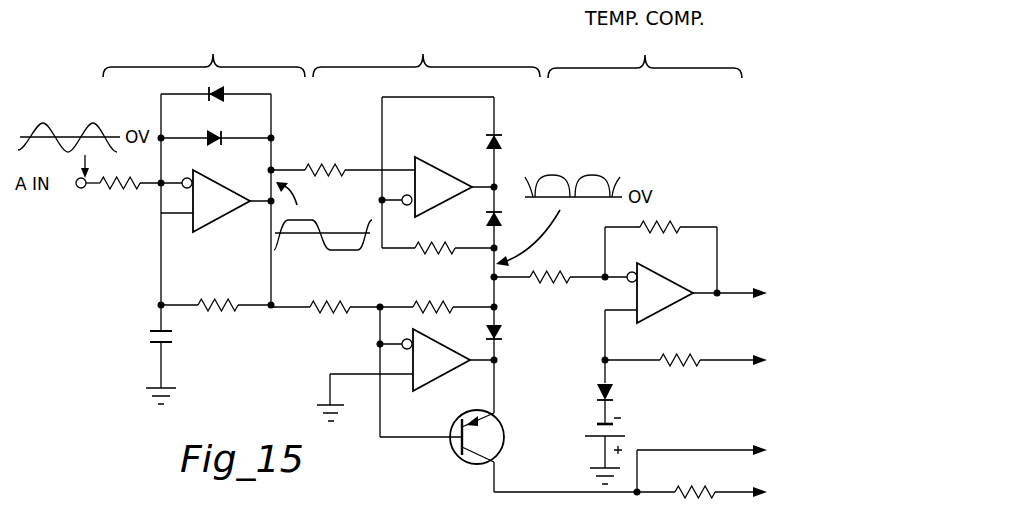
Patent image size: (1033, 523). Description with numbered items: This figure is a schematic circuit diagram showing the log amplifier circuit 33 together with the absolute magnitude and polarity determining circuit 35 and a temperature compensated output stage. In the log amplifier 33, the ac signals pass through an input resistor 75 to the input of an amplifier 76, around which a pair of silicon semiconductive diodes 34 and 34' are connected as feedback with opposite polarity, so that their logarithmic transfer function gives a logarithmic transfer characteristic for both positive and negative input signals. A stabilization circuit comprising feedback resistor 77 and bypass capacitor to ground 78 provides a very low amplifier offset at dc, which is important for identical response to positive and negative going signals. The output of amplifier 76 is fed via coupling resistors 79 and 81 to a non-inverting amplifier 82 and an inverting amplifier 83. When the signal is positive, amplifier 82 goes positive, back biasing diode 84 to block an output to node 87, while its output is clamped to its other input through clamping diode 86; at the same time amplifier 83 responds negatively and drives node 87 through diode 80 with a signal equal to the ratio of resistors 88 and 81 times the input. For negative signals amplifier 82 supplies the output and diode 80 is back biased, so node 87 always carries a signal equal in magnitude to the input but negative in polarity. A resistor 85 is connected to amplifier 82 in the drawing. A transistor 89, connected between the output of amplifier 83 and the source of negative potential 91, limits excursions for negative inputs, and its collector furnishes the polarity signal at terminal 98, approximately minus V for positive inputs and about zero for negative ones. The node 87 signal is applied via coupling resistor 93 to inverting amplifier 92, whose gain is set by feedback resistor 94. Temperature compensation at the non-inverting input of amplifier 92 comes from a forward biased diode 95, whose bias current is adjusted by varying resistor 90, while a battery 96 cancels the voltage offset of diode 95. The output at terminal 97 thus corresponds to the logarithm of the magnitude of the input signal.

The logarithmic amplifier 33 is at (204, 40).
The silicon semiconductive diode 34 is at (232, 86).
The silicon semiconductive diode 34' is at (234, 127).
The absolute magnitude and polarity determining circuit 35 is at (426, 42).
The input resistor 75 is at (118, 188).
The amplifier 76 is at (218, 179).
The feedback resistor 77 is at (230, 301).
The bypass capacitor 78 is at (151, 340).
The coupling resistor 79 is at (311, 165).
The diode 80 is at (503, 342).
The coupling resistor 81 is at (340, 300).
The non-inverting amplifier 82 is at (452, 182).
The inverting amplifier 83 is at (434, 340).
The diode 84 is at (503, 214).
The resistor 85 is at (450, 247).
The clamping diode 86 is at (503, 146).
The node 87 is at (490, 278).
The resistor 88 is at (440, 300).
The transistor 89 is at (505, 428).
The resistor 90 is at (681, 340).
The source of negative potential 91 is at (762, 485).
The inverting amplifier 92 is at (676, 264).
The coupling resistor 93 is at (537, 282).
The feedback resistor 94 is at (645, 232).
The forward biased diode 95 is at (598, 390).
The battery 96 is at (593, 426).
The output terminal 97 is at (760, 297).
The polarity output terminal 98 is at (755, 447).